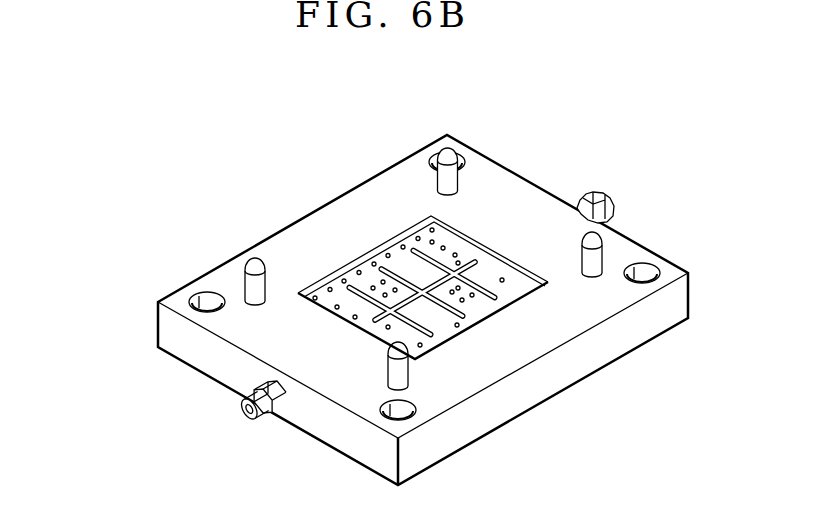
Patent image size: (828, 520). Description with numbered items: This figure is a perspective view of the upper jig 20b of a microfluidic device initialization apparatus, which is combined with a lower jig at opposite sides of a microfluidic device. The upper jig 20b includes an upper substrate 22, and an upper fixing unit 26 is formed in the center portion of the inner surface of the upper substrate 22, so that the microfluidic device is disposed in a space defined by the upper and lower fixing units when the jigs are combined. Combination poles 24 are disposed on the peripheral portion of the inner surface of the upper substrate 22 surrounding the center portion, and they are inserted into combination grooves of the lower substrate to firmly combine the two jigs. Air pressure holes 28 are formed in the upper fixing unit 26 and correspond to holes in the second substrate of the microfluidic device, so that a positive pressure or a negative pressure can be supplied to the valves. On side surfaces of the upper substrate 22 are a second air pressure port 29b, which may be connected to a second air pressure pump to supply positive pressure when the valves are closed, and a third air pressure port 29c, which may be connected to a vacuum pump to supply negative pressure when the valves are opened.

The upper jig 20b is at (262, 200).
The upper substrate 22 is at (452, 387).
The combination poles 24 is at (593, 268).
The upper fixing unit 26 is at (517, 285).
The air pressure holes 28 is at (487, 318).
The second air pressure port 29b is at (600, 192).
The third air pressure port 29c is at (247, 408).